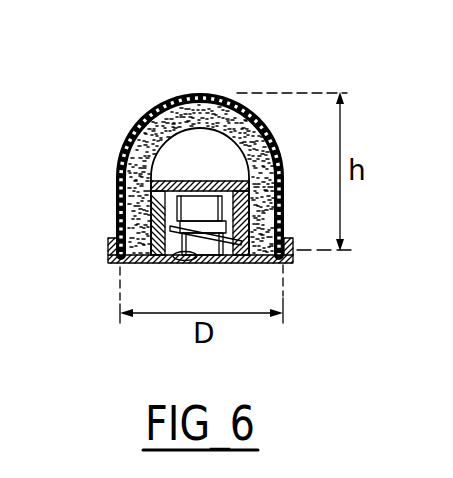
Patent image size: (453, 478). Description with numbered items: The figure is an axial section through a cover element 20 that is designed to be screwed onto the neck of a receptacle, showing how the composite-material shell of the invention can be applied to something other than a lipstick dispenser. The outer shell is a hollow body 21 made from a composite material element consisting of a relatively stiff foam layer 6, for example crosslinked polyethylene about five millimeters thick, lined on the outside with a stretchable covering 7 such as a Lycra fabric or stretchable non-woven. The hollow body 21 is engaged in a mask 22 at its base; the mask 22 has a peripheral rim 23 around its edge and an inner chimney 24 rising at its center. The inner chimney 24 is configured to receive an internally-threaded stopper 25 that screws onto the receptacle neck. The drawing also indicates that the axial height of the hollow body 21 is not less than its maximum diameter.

The cover element 20 is at (103, 96).
The hollow body 21 is at (172, 103).
The stretchable covering 7 is at (124, 184).
The foam layer 6 is at (136, 211).
The internally-threaded stopper 25 is at (215, 183).
The inner chimney 24 is at (245, 258).
The mask 22 is at (276, 263).
The peripheral rim 23 is at (291, 243).